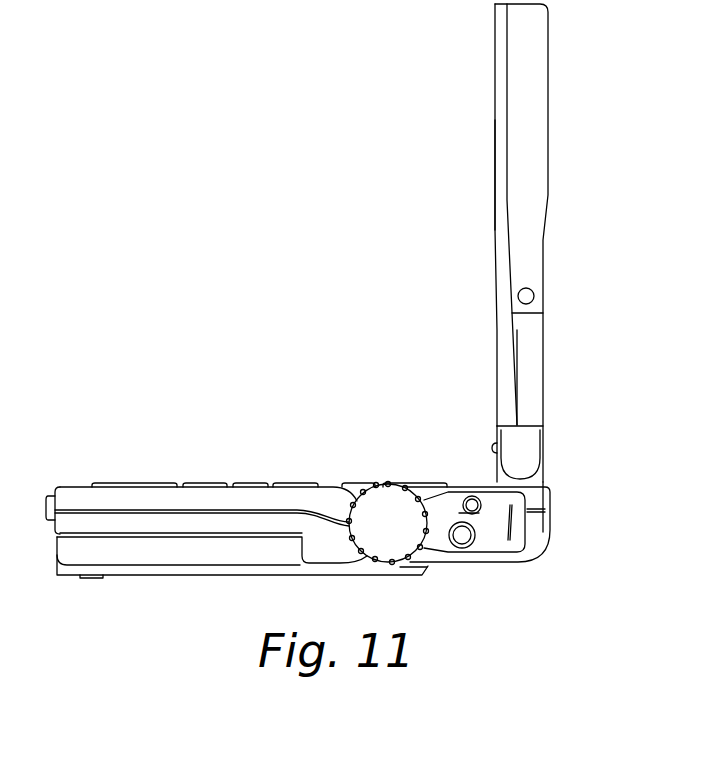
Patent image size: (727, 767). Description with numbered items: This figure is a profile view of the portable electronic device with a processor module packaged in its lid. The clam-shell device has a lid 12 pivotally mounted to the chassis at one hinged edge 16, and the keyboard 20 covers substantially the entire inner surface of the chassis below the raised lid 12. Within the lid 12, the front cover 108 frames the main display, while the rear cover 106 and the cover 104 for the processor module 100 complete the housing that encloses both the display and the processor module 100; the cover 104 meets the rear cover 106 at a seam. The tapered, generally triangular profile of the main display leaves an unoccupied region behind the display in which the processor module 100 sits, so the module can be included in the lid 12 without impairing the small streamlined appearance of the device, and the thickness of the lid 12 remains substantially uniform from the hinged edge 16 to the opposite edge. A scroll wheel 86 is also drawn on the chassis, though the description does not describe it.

The lid 12 is at (532, 68).
The processor module 100 is at (530, 103).
The cover 104 is at (527, 198).
The rear cover 106 is at (545, 355).
The front cover 108 is at (500, 143).
The edge 16 is at (527, 452).
The keyboard 20 is at (207, 484).
The scroll wheel 86 is at (392, 542).